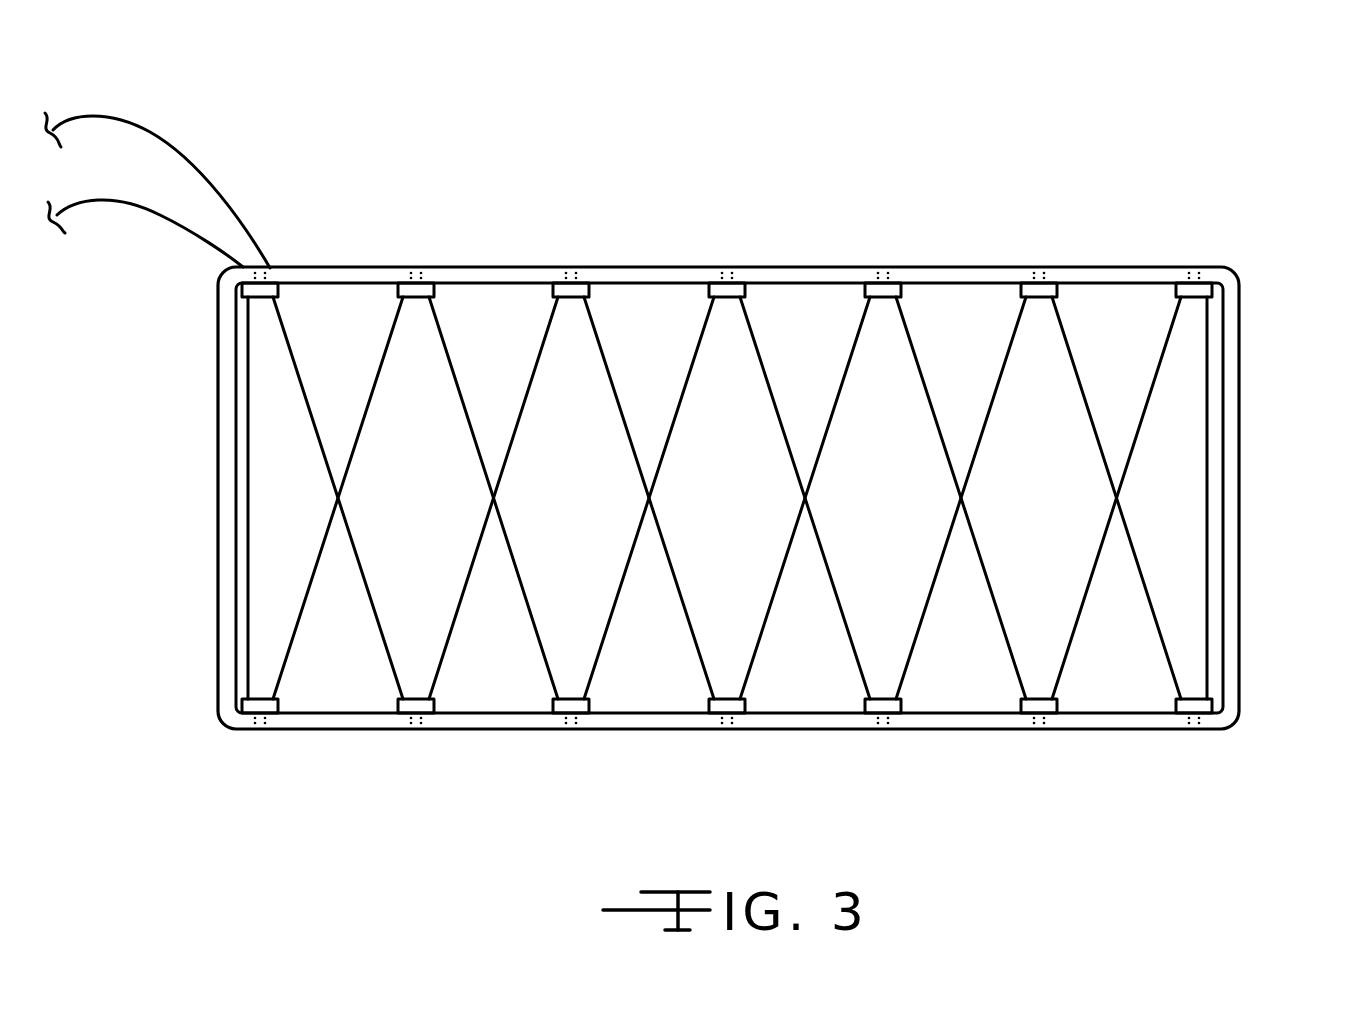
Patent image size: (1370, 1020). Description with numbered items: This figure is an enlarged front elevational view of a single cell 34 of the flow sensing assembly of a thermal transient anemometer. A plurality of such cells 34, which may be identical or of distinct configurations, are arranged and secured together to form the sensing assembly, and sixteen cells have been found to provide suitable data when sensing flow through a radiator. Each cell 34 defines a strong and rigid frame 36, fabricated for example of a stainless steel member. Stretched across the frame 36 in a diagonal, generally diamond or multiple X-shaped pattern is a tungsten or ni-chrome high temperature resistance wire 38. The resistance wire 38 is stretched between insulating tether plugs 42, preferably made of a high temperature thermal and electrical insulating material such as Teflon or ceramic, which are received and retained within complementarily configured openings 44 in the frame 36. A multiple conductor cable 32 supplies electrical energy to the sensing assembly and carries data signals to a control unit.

The multiple conductor cable 32 is at (143, 197).
The cell 34 is at (814, 258).
The frame 36 is at (1223, 343).
The high temperature resistance wire 38 is at (680, 595).
The insulating tether plug 42 is at (562, 290).
The opening 44 is at (1040, 275).